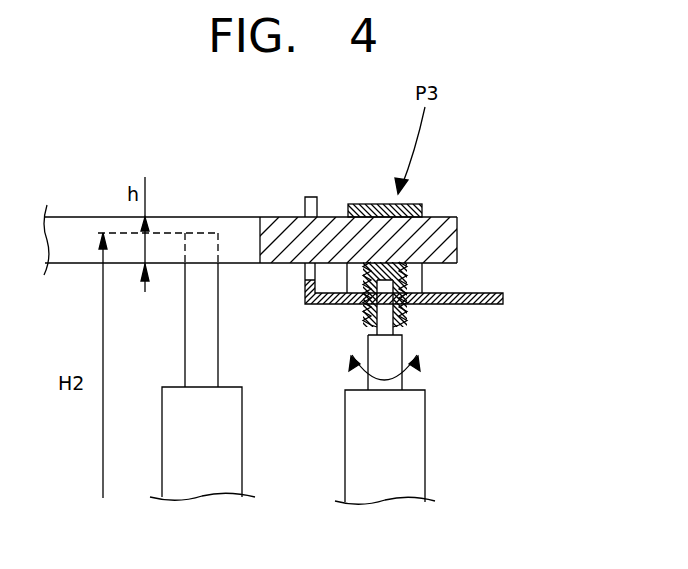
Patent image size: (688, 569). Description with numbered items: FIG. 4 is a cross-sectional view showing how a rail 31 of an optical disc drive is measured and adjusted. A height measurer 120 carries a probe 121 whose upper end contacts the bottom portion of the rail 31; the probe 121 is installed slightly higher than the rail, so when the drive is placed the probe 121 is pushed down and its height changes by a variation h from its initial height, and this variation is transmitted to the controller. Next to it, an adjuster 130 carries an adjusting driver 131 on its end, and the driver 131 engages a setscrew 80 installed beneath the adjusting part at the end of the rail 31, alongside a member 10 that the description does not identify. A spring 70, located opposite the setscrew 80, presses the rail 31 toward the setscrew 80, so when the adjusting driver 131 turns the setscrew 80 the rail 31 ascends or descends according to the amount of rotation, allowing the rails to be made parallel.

The support bracket 10 is at (500, 291).
The rail 31 is at (447, 227).
The spring 70 is at (383, 204).
The setscrew 80 is at (363, 316).
The height measurer 120 is at (248, 466).
The probe 121 is at (210, 316).
The adjuster 130 is at (445, 465).
The adjusting driver 131 is at (400, 333).